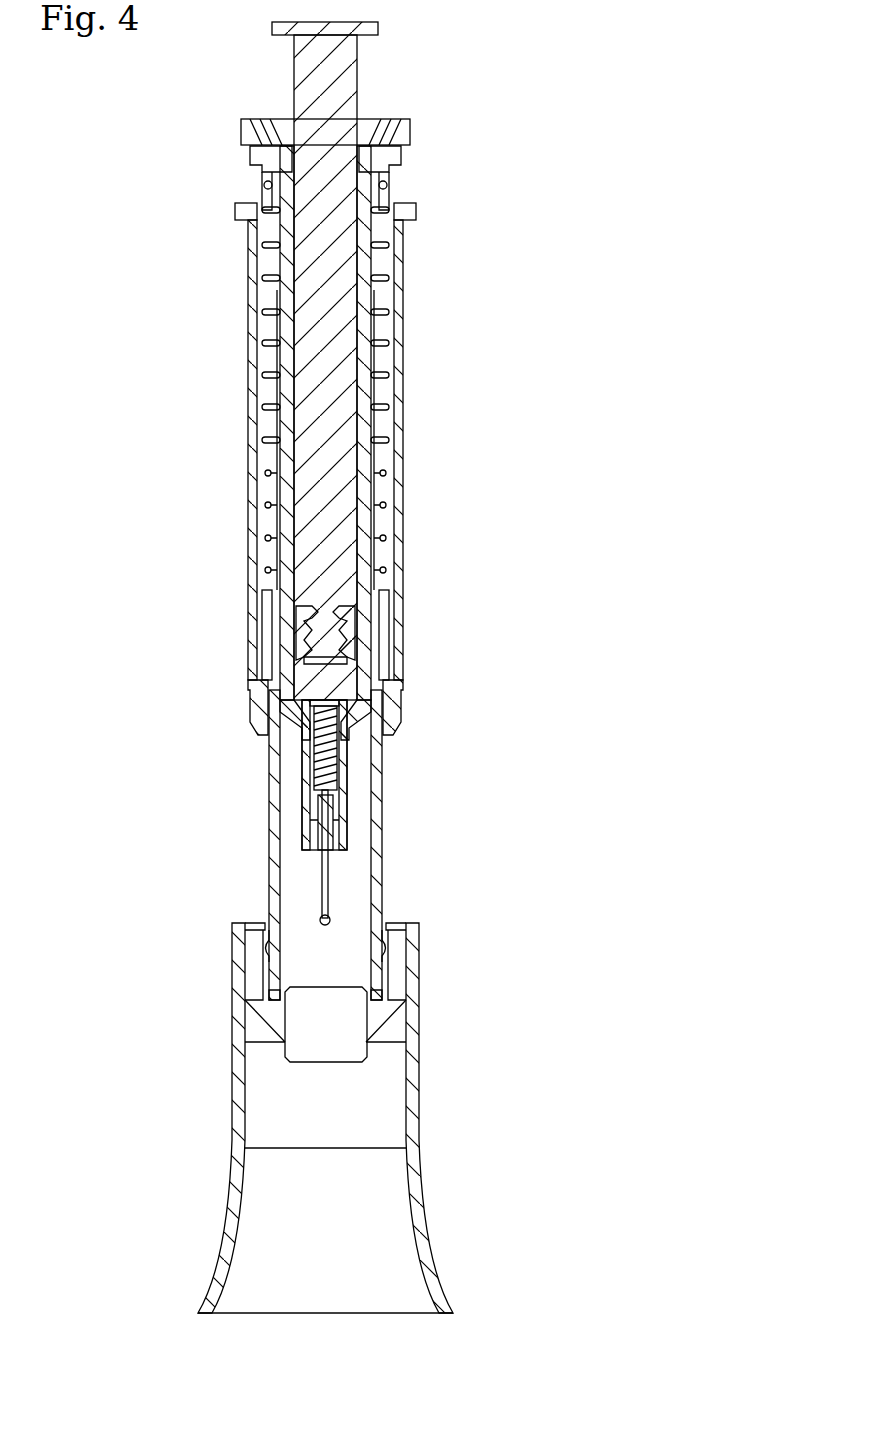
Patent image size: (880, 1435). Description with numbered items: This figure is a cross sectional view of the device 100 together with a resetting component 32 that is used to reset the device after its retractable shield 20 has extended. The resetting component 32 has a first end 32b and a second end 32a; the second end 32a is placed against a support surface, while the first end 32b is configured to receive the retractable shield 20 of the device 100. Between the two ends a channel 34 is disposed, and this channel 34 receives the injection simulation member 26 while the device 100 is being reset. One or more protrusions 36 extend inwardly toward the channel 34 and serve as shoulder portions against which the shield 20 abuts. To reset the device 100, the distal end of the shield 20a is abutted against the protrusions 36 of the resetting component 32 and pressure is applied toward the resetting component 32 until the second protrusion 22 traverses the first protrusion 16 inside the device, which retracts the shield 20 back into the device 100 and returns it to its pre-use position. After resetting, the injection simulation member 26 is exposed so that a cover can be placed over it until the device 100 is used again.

The device 100 is at (598, 165).
The first protrusion 16 is at (387, 694).
The retractable shield 20 is at (382, 820).
The distal end of the shield 20a is at (280, 1000).
The second protrusion 22 is at (268, 945).
The injection simulation member 26 is at (330, 880).
The resetting component 32 is at (413, 1090).
The second end 32a is at (455, 1313).
The first end 32b is at (410, 928).
The channel 34 is at (308, 1040).
The protrusions 36 is at (383, 1022).